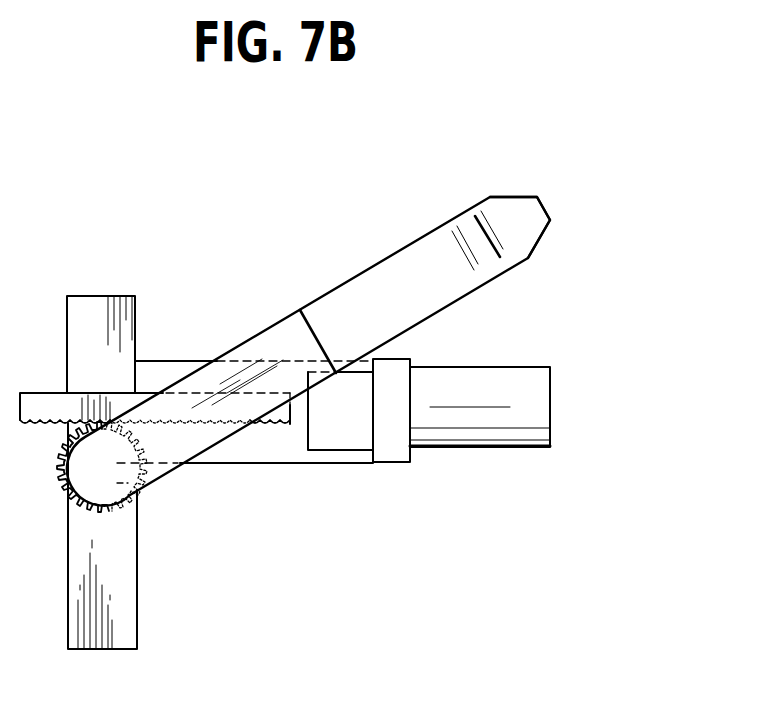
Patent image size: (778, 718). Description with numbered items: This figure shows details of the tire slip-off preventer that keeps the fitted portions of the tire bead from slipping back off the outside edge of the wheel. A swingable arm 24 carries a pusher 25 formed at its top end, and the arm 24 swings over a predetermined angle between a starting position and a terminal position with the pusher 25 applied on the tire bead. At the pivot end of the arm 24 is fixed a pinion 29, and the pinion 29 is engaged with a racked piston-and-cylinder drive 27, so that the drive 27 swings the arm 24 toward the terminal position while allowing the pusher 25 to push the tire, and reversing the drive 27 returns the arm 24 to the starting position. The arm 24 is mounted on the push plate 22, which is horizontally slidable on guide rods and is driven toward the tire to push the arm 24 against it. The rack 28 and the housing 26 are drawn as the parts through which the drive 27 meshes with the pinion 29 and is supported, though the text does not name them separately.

The push plate 22 is at (125, 585).
The swingable arm 24 is at (270, 348).
The pusher 25 is at (473, 287).
The housing 26 is at (273, 450).
The racked piston-and-cylinder drive 27 is at (465, 430).
The rack 28 is at (113, 395).
The pinion 29 is at (147, 493).